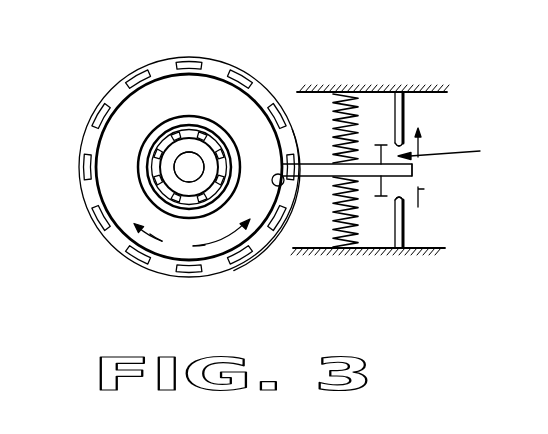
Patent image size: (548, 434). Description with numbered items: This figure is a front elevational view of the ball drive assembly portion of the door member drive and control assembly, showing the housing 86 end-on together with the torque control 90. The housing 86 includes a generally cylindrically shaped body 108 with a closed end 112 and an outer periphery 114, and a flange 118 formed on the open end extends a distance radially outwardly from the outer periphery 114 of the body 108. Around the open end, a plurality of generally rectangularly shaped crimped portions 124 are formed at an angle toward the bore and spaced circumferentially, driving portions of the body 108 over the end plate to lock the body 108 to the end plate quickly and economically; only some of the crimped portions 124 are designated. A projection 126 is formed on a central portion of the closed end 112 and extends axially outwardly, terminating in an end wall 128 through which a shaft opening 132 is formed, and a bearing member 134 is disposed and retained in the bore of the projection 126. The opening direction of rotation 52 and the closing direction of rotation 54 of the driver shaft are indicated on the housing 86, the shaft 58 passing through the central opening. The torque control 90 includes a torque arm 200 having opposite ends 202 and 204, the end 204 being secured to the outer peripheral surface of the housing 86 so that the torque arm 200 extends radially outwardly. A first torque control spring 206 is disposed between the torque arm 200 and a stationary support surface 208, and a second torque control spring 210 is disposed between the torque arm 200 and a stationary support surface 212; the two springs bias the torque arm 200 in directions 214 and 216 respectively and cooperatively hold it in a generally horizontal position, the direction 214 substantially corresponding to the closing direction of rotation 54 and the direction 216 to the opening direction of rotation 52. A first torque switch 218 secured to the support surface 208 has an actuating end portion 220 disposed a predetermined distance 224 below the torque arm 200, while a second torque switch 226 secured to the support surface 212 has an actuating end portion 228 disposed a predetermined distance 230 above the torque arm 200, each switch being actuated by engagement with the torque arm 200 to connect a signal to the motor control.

The opening direction of rotation 52 is at (157, 243).
The closing direction of rotation 54 is at (220, 246).
The shaft 58 is at (189, 163).
The housing 86 is at (219, 55).
The torque control 90 is at (450, 151).
The body 108 is at (261, 246).
The closed end 112 is at (203, 250).
The outer periphery 114 is at (162, 245).
The flange 118 is at (117, 238).
The crimped portions 124 is at (176, 62).
The projection 126 is at (180, 122).
The end wall 128 is at (146, 143).
The shaft opening 132 is at (196, 171).
The bearing member 134 is at (226, 138).
The torque arm 200 is at (414, 168).
The end 202 is at (414, 177).
The end 204 is at (287, 184).
The first torque control spring 206 is at (338, 250).
The stationary support surface 208 is at (388, 250).
The second torque control spring 210 is at (349, 92).
The stationary support surface 212 is at (372, 98).
The direction 214 is at (423, 192).
The direction 216 is at (421, 140).
The first torque switch 218 is at (405, 236).
The actuating end portion 220 is at (407, 200).
The predetermined distance 224 is at (375, 196).
The second torque switch 226 is at (400, 93).
The actuating end portion 228 is at (406, 144).
The predetermined distance 230 is at (374, 145).